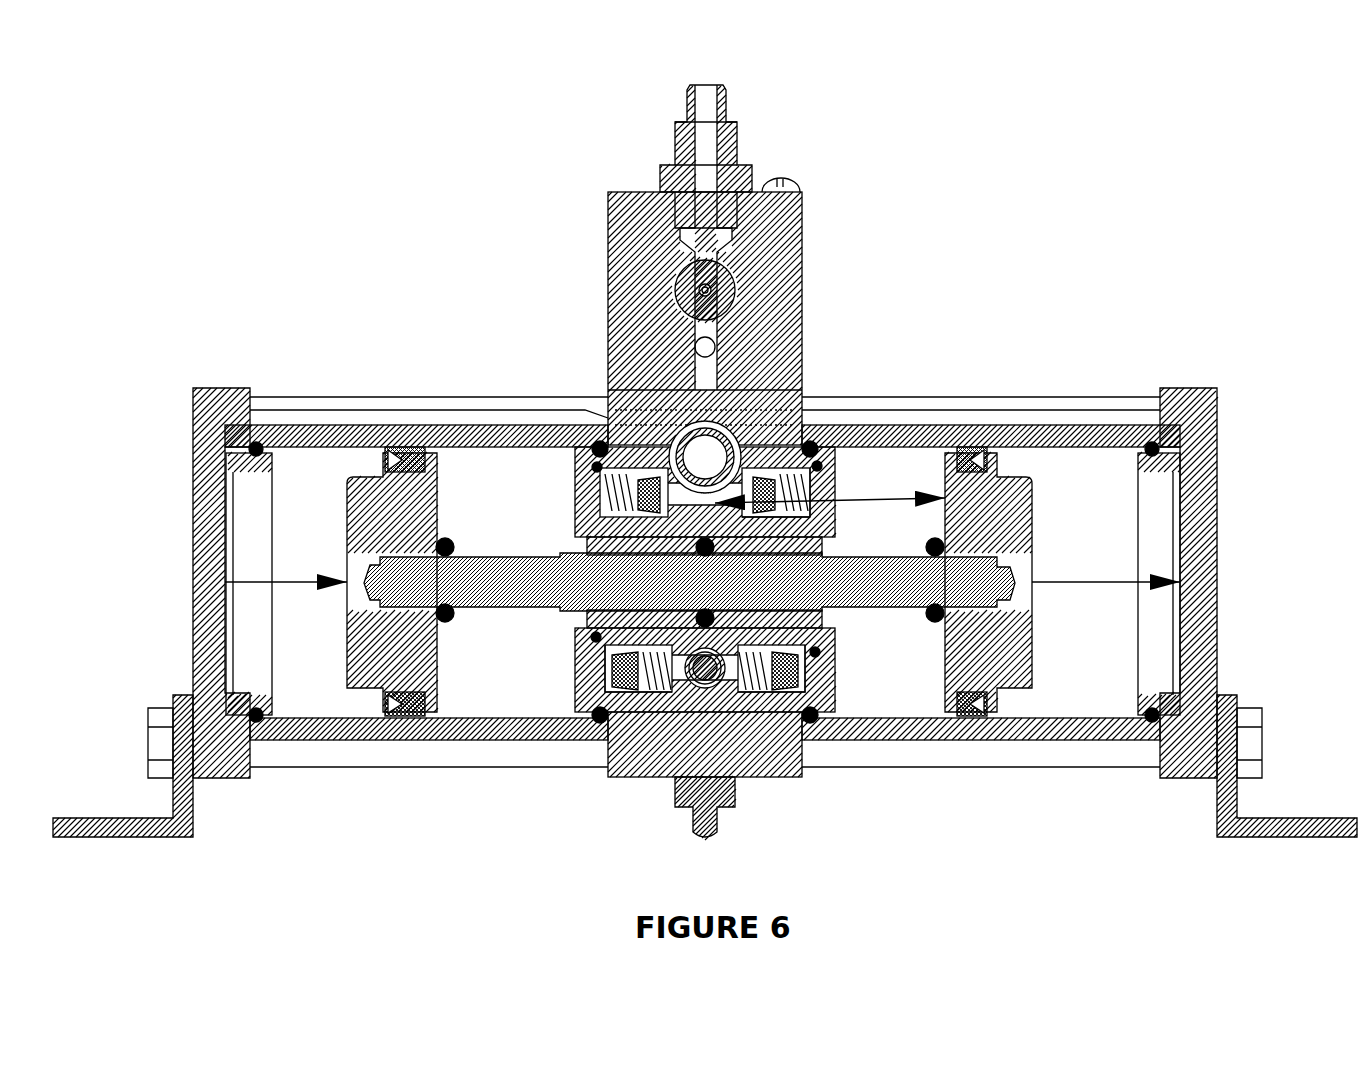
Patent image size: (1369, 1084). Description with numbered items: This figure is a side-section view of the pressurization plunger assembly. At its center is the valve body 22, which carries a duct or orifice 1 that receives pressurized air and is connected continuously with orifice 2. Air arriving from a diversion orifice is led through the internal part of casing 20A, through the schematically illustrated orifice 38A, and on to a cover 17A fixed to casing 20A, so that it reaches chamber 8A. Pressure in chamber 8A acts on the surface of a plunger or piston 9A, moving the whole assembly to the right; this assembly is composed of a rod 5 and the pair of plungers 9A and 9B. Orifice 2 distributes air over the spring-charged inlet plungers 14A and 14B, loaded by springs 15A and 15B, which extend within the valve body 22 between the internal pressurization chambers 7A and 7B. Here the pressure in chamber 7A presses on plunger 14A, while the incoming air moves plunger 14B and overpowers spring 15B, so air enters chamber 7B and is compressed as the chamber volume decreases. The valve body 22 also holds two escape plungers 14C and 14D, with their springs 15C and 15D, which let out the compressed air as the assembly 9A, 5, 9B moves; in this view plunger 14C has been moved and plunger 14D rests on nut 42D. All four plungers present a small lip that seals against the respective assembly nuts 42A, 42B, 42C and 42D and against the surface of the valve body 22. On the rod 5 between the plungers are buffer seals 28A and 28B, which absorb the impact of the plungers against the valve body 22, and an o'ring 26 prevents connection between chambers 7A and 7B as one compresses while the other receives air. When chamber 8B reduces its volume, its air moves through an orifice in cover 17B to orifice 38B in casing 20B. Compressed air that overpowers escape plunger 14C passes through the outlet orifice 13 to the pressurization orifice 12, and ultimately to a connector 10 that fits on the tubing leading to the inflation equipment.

The orifice 1 is at (713, 395).
The orifice 2 is at (815, 532).
The rod 5 is at (837, 580).
The internal pressurization chamber 7A is at (512, 715).
The internal pressurization chamber 7B is at (890, 707).
The chamber 8A is at (317, 682).
The chamber 8B is at (1075, 688).
The plunger 9A is at (368, 486).
The plunger 9B is at (1007, 483).
The connector 10 is at (712, 827).
The pressurization orifice 12 is at (700, 678).
The outlet orifice 13 is at (672, 675).
The inlet plunger 14A is at (637, 494).
The inlet plunger 14B is at (783, 490).
The escape plunger 14C is at (623, 670).
The escape plunger 14D is at (787, 670).
The spring 15A is at (667, 462).
The spring 15B is at (802, 472).
The spring 15C is at (650, 688).
The spring 15D is at (760, 688).
The cover 17A is at (200, 423).
The cover 17B is at (1208, 597).
The casing 20A is at (407, 432).
The casing 20B is at (933, 425).
The valve body 22 is at (758, 755).
The o'ring 26 is at (690, 547).
The seal 28A is at (445, 630).
The seal 28B is at (933, 630).
The orifice 38A is at (458, 408).
The orifice 38B is at (903, 400).
The assembly nut 42A is at (575, 468).
The assembly nut 42B is at (833, 470).
The assembly nut 42C is at (575, 637).
The assembly nut 42D is at (810, 652).